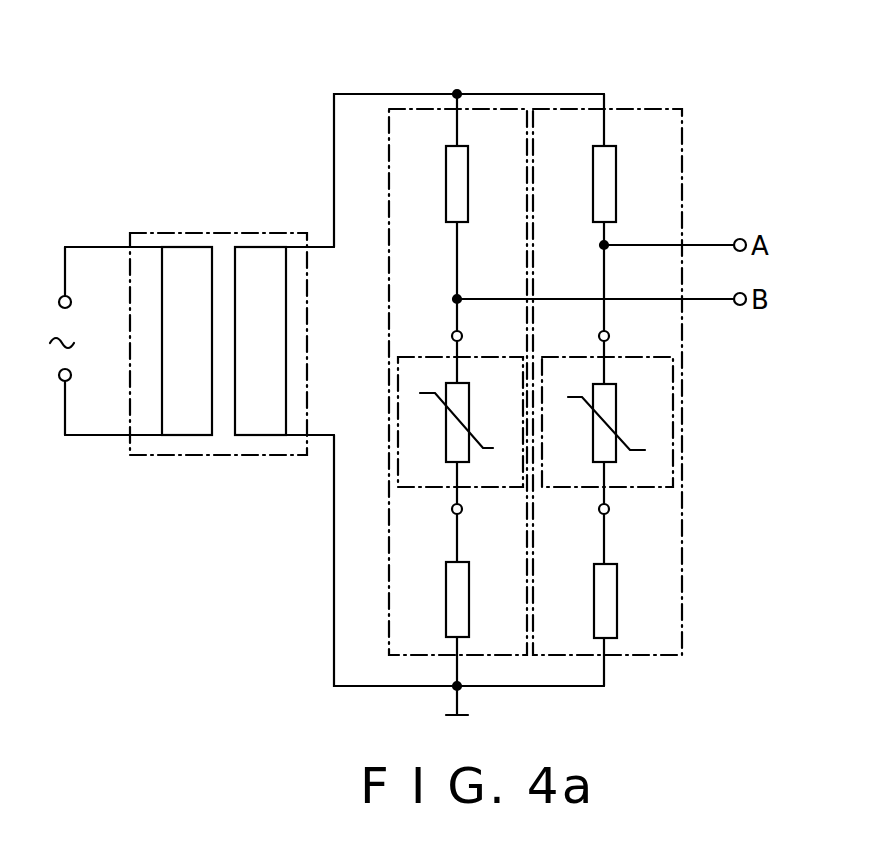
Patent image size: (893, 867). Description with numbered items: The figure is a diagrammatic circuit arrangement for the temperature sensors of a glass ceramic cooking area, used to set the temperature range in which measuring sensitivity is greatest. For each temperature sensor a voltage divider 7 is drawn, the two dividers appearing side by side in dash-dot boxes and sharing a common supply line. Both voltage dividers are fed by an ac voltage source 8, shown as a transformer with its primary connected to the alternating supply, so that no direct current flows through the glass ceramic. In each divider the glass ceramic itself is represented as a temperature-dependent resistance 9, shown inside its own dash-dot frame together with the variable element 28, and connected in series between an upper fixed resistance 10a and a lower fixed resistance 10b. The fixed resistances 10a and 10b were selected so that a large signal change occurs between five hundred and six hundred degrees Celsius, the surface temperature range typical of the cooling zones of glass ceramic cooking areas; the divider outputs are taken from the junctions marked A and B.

The voltage divider 7 is at (555, 108).
The ac voltage source 8 is at (197, 233).
The temperature-dependent resistance 9 is at (402, 447).
The fixed resistance 10a is at (457, 182).
The fixed resistance 10b is at (605, 583).
The varistor 28 is at (643, 398).